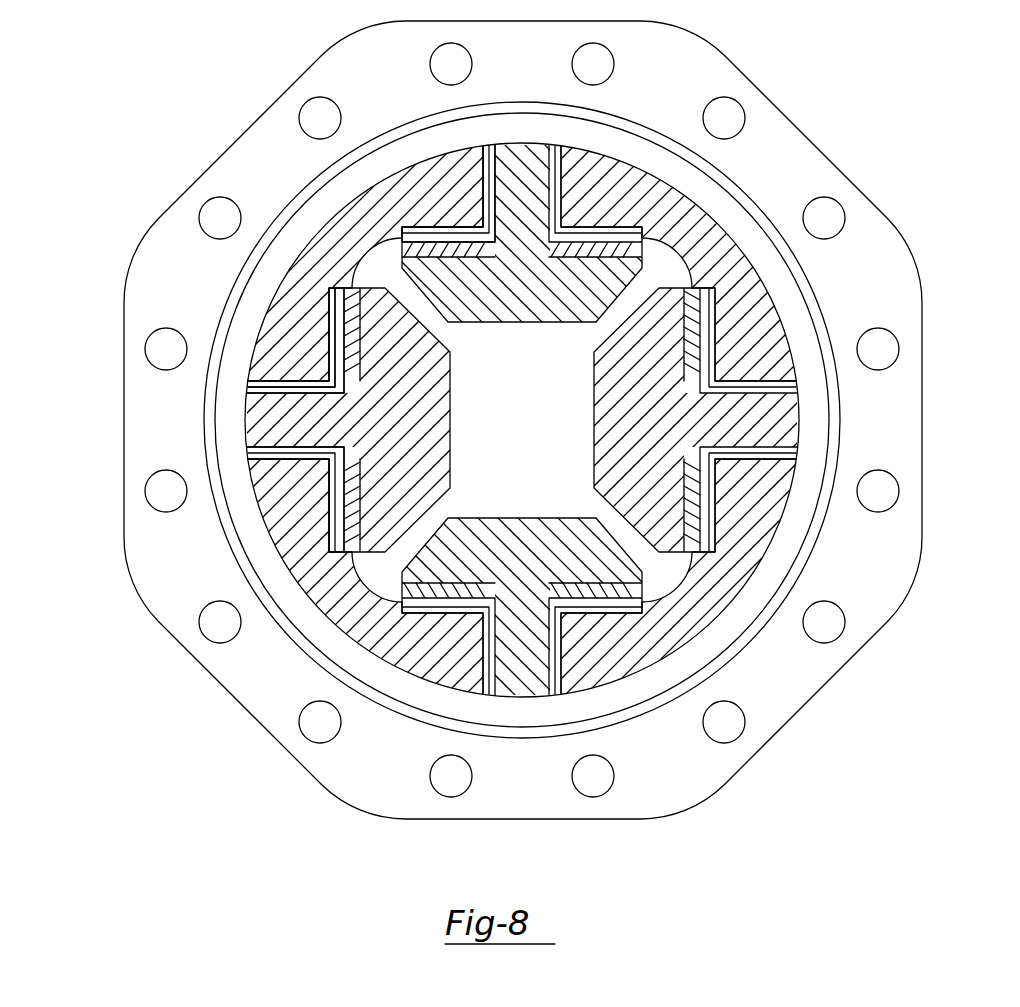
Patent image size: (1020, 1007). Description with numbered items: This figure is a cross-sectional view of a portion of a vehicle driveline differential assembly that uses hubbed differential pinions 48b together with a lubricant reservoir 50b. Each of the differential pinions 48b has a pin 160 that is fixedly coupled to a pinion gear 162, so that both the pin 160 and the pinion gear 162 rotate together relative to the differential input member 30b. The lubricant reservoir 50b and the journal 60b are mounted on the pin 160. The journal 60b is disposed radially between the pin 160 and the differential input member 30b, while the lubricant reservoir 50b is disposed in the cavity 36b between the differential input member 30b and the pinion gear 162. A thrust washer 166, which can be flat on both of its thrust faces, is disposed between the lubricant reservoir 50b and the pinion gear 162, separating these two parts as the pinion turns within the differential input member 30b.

The differential input member 30b is at (800, 152).
The cavity 36b is at (548, 500).
The differential pinion 48b is at (579, 278).
The lubricant reservoir 50b is at (345, 288).
The journal 60b is at (247, 388).
The pin 160 is at (413, 330).
The pinion gear 162 is at (293, 385).
The thrust washer 166 is at (350, 375).